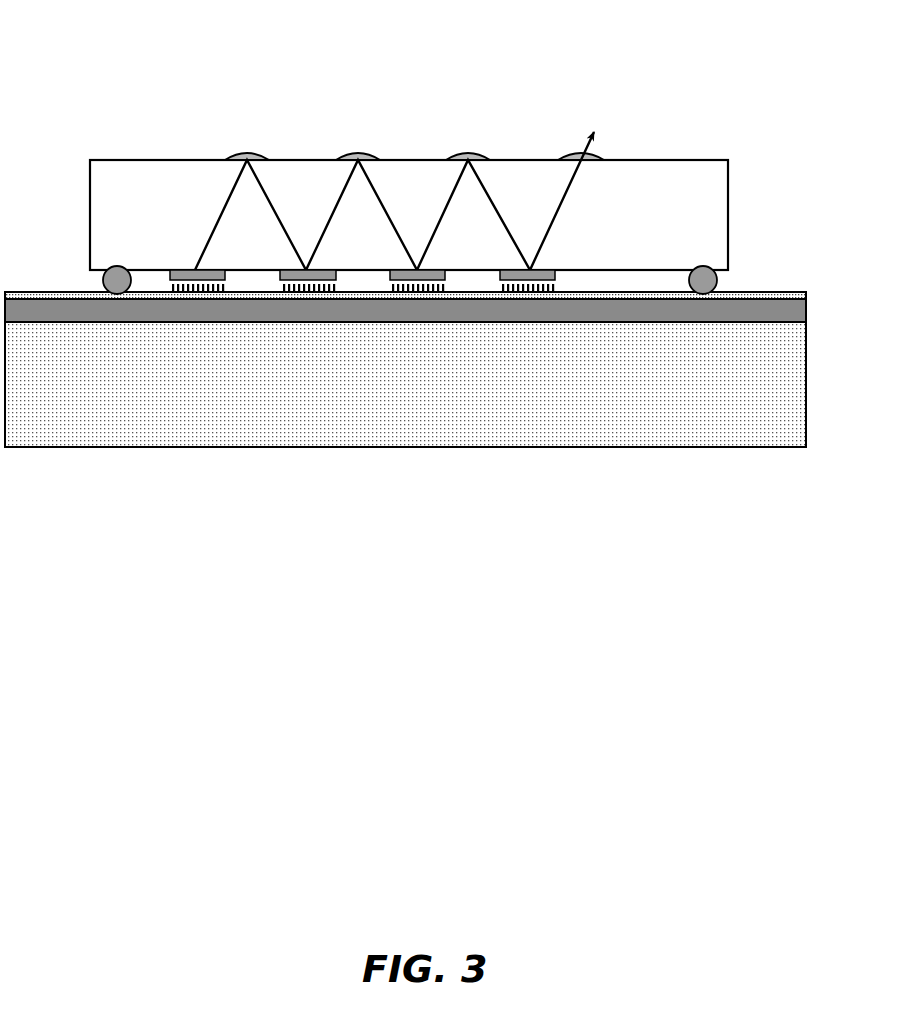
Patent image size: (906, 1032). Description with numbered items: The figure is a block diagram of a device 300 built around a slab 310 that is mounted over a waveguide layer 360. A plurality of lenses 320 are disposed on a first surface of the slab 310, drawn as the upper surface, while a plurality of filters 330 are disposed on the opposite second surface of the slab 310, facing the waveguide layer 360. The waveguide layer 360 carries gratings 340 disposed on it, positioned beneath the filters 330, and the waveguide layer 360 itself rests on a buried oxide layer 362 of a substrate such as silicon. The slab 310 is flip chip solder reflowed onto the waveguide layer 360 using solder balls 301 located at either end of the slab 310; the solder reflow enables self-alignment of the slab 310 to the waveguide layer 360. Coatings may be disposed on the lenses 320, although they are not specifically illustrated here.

The device 300 is at (166, 56).
The solder balls 301 is at (102, 281).
The slab 310 is at (106, 192).
The lenses 320 is at (236, 156).
The filters 330 is at (190, 269).
The gratings 340 is at (228, 291).
The waveguide layer 360 is at (742, 282).
The buried oxide layer 362 is at (405, 310).